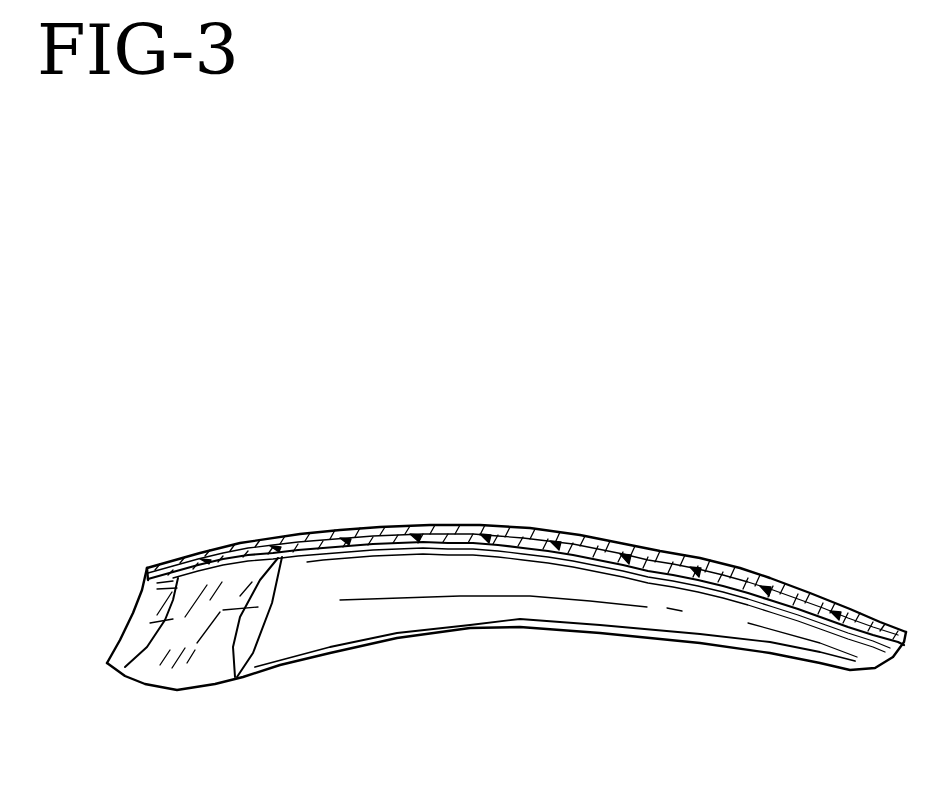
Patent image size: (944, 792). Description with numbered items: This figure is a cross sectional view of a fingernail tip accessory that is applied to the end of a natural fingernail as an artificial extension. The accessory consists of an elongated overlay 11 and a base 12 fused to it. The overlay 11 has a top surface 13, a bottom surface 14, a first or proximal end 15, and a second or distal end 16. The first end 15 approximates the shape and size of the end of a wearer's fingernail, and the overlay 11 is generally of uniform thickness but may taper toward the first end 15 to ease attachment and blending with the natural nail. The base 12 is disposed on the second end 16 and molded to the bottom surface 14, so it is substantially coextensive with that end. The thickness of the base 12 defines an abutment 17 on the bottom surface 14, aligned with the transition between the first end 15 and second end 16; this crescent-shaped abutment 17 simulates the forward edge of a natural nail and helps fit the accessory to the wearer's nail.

The overlay 11 is at (688, 555).
The base 12 is at (722, 579).
The top surface 13 is at (164, 566).
The bottom surface 14 is at (130, 671).
The first end 15 is at (230, 547).
The second end 16 is at (840, 603).
The abutment 17 is at (243, 672).